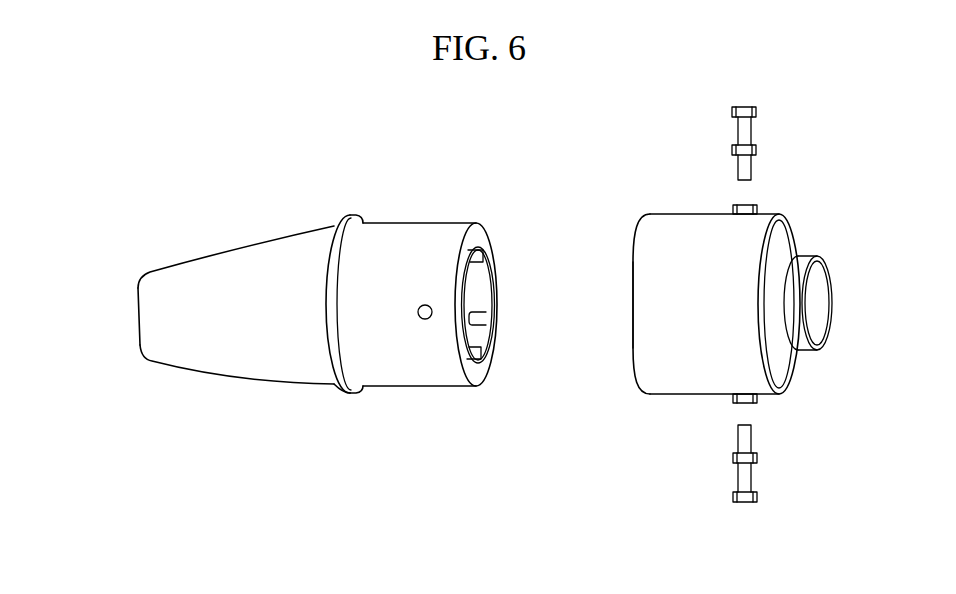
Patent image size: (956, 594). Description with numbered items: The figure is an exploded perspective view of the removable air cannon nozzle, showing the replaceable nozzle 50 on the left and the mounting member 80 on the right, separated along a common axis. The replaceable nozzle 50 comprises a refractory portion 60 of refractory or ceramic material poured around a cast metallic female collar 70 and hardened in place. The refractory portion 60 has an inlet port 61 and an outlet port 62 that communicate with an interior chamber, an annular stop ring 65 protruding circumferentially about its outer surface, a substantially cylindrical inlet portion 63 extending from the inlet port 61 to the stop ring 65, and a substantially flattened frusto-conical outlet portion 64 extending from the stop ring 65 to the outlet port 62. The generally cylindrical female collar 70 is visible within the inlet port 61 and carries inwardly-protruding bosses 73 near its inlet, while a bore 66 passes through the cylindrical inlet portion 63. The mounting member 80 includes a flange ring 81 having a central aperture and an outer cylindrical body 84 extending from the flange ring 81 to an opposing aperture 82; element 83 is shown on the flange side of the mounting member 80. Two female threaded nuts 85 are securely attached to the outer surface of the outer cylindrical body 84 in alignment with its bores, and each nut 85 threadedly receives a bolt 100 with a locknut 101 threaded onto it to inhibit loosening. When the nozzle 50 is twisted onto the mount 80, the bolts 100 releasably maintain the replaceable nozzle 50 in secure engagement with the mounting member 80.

The replaceable nozzle 50 is at (377, 167).
The refractory portion 60 is at (313, 228).
The inlet port 61 is at (478, 340).
The outlet port 62 is at (138, 340).
The cylindrical inlet portion 63 is at (432, 370).
The frusto-conical outlet portion 64 is at (247, 353).
The annular stop ring 65 is at (353, 393).
The bore 66 is at (427, 305).
The female collar 70 is at (482, 292).
The boss 73 is at (482, 318).
The mounting member 80 is at (669, 166).
The flange ring 81 is at (795, 235).
The opposing aperture 82 is at (635, 345).
The boss 83 is at (793, 352).
The outer cylindrical body 84 is at (717, 380).
The female threaded nut 85 is at (735, 207).
The bolt 100 is at (757, 112).
The locknut 101 is at (757, 150).